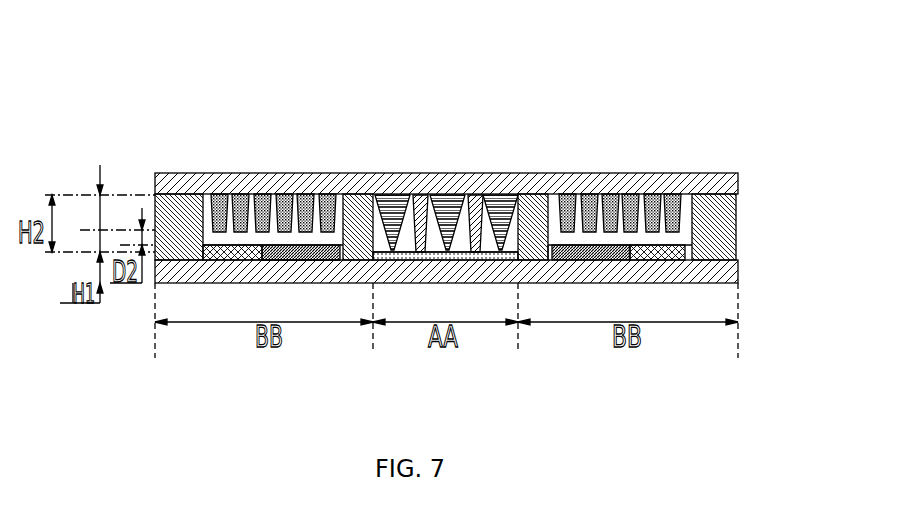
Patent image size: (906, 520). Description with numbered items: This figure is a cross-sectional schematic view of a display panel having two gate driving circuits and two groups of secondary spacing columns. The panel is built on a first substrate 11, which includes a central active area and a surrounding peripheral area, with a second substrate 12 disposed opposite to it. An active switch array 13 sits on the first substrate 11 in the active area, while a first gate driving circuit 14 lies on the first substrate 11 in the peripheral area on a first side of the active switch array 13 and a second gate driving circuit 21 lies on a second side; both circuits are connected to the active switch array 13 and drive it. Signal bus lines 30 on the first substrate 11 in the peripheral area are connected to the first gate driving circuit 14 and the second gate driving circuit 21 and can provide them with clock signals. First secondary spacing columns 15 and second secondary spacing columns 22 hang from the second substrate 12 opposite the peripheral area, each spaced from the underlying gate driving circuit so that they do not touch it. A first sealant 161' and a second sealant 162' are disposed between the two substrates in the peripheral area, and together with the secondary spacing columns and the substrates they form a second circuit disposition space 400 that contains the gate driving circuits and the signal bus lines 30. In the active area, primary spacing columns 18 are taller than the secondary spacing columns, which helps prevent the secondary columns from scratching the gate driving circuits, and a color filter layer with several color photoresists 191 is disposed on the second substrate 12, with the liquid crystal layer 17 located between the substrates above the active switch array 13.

The first substrate 11 is at (738, 270).
The second substrate 12 is at (738, 183).
The active switch array 13 is at (468, 260).
The first gate driving circuit 14 is at (298, 262).
The first secondary spacing columns 15 is at (303, 190).
The liquid crystal layer 17 is at (388, 256).
The primary spacing columns 18 is at (419, 200).
The second gate driving circuit 21 is at (549, 258).
The second secondary spacing columns 22 is at (599, 190).
The signal bus lines 30 is at (240, 256).
The first sealant 161' is at (445, 133).
The second sealant 162' is at (443, 133).
The color photoresists 191 is at (492, 192).
The second circuit disposition space 400 is at (208, 258).